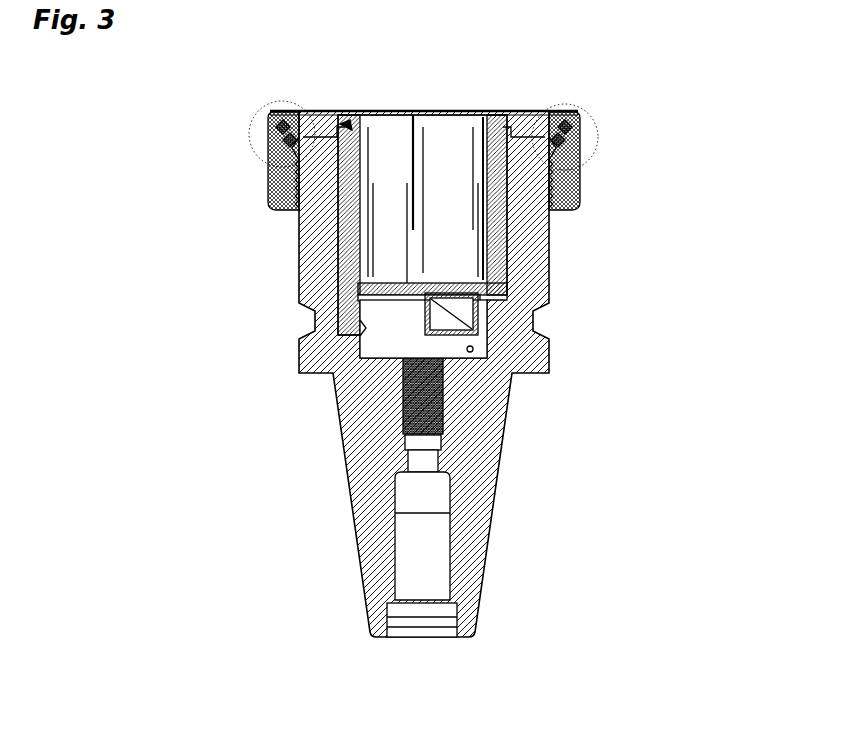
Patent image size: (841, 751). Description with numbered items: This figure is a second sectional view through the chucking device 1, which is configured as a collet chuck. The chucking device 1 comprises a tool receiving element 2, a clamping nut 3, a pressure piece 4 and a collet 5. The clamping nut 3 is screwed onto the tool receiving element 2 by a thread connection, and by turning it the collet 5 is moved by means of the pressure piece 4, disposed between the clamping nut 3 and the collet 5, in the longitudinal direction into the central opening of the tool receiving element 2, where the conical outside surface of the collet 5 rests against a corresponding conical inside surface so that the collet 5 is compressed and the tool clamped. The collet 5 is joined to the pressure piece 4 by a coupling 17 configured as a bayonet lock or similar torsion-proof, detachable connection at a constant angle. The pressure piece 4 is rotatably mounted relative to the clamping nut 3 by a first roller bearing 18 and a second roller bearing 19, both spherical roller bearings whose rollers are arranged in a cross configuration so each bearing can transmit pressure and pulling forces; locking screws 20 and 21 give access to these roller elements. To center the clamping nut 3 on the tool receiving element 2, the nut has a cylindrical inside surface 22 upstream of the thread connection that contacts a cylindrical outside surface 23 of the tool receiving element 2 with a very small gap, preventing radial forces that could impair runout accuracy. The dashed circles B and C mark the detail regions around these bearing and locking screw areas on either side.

The chucking device 1 is at (626, 522).
The tool receiving element 2 is at (372, 505).
The clamping nut 3 is at (268, 197).
The pressure piece 4 is at (517, 127).
The collet 5 is at (352, 242).
The coupling 17 is at (346, 124).
The first roller bearing 18 is at (272, 191).
The second roller bearing 19 is at (274, 115).
The locking screw 20 is at (276, 143).
The locking screw 21 is at (572, 135).
The cylindrical inside surface 22 is at (541, 212).
The cylindrical outside surface 23 is at (548, 197).
The detail B is at (270, 104).
The detail C is at (583, 103).